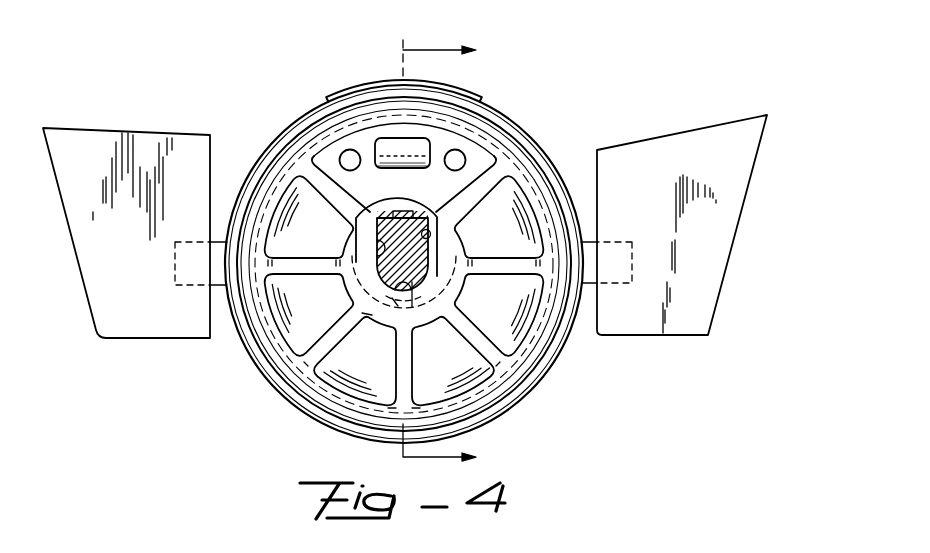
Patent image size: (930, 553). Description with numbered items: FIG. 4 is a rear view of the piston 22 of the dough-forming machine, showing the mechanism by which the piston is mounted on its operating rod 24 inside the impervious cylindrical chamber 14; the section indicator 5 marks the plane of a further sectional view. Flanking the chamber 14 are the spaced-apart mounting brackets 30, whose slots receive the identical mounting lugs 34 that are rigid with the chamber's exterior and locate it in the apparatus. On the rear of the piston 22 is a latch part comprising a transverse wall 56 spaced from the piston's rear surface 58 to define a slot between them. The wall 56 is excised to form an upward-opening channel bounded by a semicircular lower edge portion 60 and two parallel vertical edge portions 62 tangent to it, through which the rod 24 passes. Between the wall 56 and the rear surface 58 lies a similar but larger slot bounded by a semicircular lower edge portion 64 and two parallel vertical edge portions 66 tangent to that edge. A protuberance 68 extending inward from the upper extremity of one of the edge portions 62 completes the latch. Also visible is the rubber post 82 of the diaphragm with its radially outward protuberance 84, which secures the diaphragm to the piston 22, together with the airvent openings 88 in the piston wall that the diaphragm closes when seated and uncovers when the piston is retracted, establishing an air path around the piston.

The cylindrical chamber 14 is at (500, 114).
The piston 22 is at (296, 378).
The operating rod 24 is at (424, 272).
The mounting brackets 30 is at (80, 245).
The mounting lugs 34 is at (213, 283).
The transverse wall 56 is at (446, 213).
The rear surface 58 is at (404, 207).
The semicircular lower edge portion 60 is at (405, 312).
The parallel vertical edge portions 62 is at (378, 262).
The semicircular lower edge portion 64 is at (367, 314).
The parallel vertical edge portions 66 is at (347, 238).
The protuberance 68 is at (378, 198).
The post 82 is at (413, 143).
The protuberance 84 is at (388, 140).
The airvent openings 88 is at (345, 158).
The section line 5- 5 is at (449, 256).